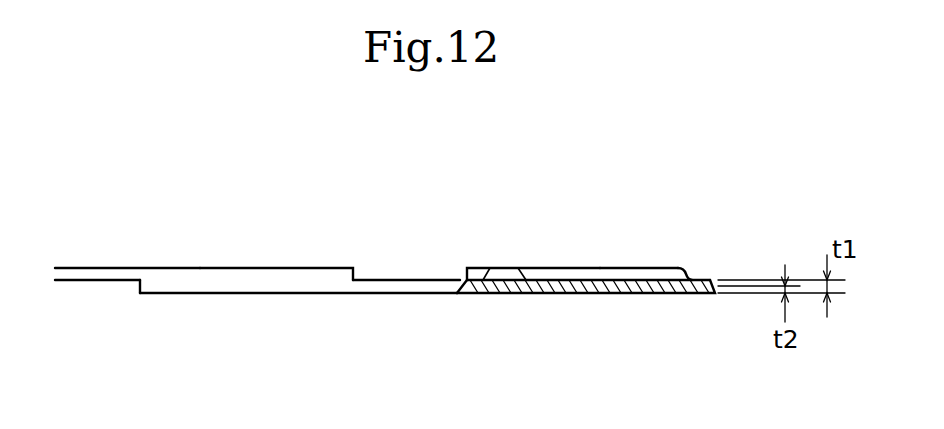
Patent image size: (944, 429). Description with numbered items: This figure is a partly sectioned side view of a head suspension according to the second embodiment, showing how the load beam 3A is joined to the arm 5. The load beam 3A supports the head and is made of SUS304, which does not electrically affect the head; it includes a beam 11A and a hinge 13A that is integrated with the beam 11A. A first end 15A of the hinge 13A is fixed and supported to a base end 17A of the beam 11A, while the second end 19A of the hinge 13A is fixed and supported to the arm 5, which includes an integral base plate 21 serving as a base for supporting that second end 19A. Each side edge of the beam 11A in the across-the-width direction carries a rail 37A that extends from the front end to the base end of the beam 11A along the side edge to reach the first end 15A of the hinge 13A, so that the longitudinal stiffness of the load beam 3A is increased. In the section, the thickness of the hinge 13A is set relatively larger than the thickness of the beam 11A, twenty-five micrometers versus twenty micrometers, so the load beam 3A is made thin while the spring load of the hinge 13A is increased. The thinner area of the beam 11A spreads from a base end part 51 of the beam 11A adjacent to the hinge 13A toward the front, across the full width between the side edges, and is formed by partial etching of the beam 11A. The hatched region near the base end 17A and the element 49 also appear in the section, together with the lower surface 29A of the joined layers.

The arm 5 is at (105, 266).
The base plate 21 is at (250, 267).
The hinge 13A is at (411, 277).
The second end of the hinge 19A is at (234, 296).
The first end of the hinge 15A is at (469, 297).
The base end of the beam 17A is at (502, 297).
The bottom surface 29A is at (625, 295).
The load beam 3A is at (560, 266).
The rail 37A is at (610, 267).
The beam 11A is at (696, 274).
The base end part of the beam 51 is at (493, 268).
The protrusion 49 is at (524, 278).